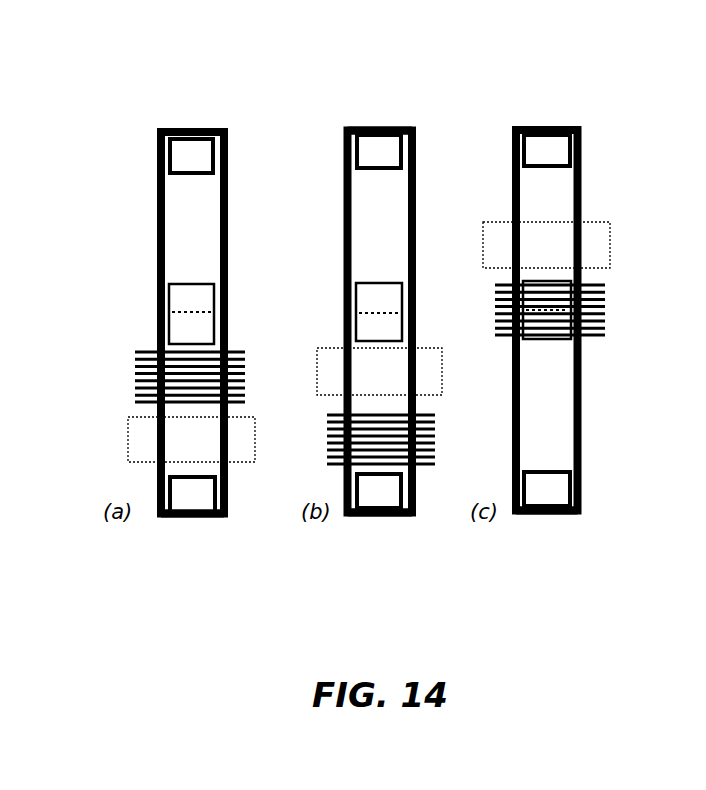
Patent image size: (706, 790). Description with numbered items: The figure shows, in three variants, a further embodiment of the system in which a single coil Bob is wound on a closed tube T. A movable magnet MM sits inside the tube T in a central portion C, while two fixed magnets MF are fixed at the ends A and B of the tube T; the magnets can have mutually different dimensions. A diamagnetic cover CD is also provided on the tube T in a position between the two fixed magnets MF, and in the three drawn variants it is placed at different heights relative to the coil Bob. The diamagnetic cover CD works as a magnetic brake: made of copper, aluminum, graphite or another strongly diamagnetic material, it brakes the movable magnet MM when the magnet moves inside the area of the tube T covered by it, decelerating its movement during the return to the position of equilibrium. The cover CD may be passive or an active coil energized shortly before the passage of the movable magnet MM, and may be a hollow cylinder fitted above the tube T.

The end of the tube A is at (193, 127).
The end of the tube B is at (183, 519).
The closed tube T is at (180, 212).
The fixed magnet MF is at (204, 162).
The movable magnet MM is at (176, 297).
The central portion C is at (233, 317).
The coil Bob is at (132, 372).
The diamagnetic cover CD is at (135, 437).